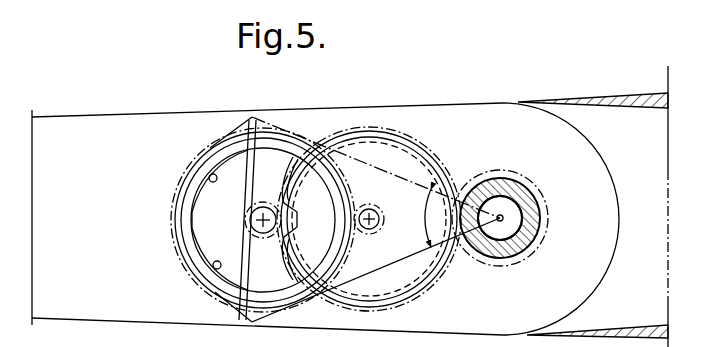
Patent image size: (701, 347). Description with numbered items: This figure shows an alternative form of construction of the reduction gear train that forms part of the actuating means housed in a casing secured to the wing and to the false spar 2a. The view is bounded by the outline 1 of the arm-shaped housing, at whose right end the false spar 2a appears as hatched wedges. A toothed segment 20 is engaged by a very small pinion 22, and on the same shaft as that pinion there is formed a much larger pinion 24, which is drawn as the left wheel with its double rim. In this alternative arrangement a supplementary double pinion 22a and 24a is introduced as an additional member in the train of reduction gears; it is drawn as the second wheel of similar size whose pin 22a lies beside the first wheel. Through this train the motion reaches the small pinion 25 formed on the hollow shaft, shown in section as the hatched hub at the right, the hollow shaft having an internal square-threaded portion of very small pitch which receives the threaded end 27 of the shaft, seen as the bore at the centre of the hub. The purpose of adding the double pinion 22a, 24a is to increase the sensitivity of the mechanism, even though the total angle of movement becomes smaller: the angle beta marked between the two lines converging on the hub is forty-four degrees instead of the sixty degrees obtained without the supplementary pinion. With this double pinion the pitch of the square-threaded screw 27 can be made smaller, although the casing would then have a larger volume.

The arm 1 is at (163, 129).
The false spar 2a is at (625, 100).
The toothed segment 20 is at (262, 121).
The pinion 22 is at (264, 204).
The double pinion 22a is at (360, 236).
The pinion 24 is at (179, 248).
The double pinion 24a is at (412, 288).
The pinion 25 is at (521, 250).
The threaded end 27 is at (512, 220).